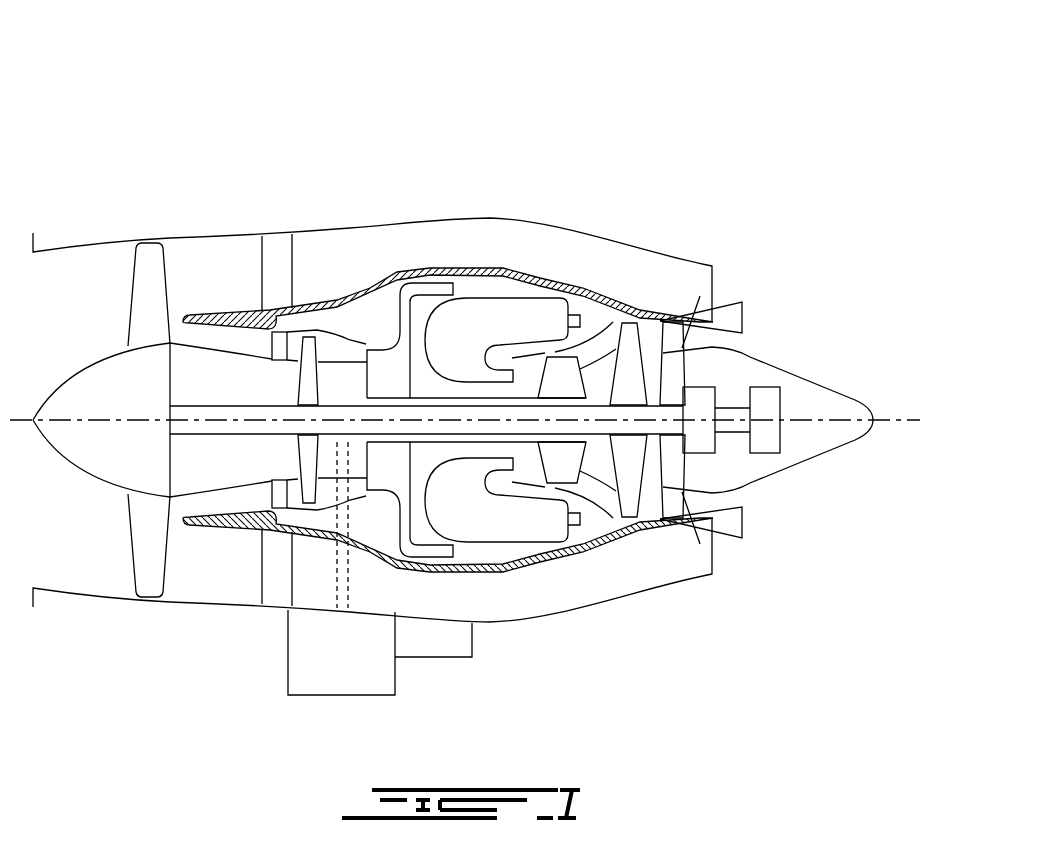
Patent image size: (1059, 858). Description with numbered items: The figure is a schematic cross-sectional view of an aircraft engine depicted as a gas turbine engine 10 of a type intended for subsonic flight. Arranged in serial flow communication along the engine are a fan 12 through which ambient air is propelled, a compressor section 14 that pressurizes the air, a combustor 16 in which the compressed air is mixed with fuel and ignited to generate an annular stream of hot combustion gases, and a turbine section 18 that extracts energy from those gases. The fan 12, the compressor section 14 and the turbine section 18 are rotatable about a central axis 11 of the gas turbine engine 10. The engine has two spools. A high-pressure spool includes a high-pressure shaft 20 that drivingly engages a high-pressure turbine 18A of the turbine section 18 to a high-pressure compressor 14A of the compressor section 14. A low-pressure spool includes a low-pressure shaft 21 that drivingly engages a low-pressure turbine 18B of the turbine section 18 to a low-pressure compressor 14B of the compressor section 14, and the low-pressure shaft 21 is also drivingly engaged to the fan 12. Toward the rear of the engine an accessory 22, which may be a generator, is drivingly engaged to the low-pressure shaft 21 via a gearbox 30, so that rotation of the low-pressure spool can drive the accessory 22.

The gas turbine engine 10 is at (633, 132).
The central axis 11 is at (905, 420).
The fan 12 is at (145, 538).
The compressor section 14 is at (337, 343).
The high-pressure compressor 14A is at (390, 480).
The low-pressure compressor 14B is at (303, 463).
The combustor 16 is at (498, 315).
The turbine section 18 is at (595, 470).
The high-pressure turbine 18A is at (565, 377).
The low-pressure turbine 18B is at (628, 352).
The high-pressure shaft 20 is at (437, 443).
The low-pressure shaft 21 is at (220, 405).
The accessory 22 is at (763, 387).
The gearbox 30 is at (698, 387).